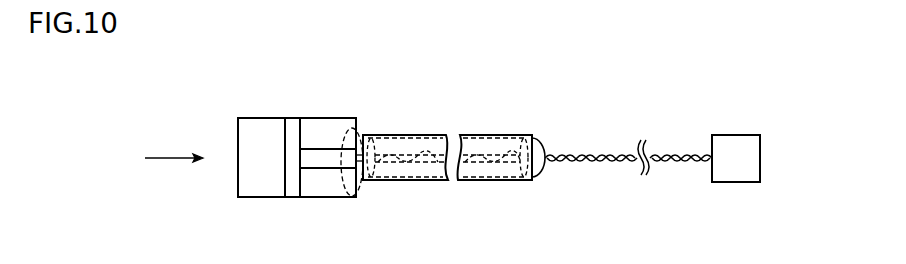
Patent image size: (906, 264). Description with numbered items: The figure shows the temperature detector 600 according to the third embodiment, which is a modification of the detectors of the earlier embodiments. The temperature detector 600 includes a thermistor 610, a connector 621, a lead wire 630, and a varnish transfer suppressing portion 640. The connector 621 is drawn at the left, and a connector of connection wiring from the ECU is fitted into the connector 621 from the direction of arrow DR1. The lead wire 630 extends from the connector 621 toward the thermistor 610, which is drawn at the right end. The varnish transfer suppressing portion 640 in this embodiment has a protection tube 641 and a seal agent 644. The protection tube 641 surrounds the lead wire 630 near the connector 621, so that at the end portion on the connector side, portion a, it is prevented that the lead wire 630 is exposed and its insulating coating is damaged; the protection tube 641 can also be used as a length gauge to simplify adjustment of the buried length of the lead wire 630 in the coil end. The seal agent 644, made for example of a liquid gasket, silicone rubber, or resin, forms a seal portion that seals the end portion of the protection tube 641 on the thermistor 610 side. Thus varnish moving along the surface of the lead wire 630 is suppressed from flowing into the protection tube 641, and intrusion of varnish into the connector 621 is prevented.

The temperature detector 600 is at (676, 112).
The thermistor 610 is at (735, 170).
The connector 621 is at (263, 137).
The lead wire 630 is at (592, 153).
The varnish transfer suppressing portion 640 is at (456, 110).
The protection tube 641 is at (413, 146).
The seal agent 644 is at (503, 132).
The portion a is at (366, 128).
The arrow DR1 is at (163, 158).